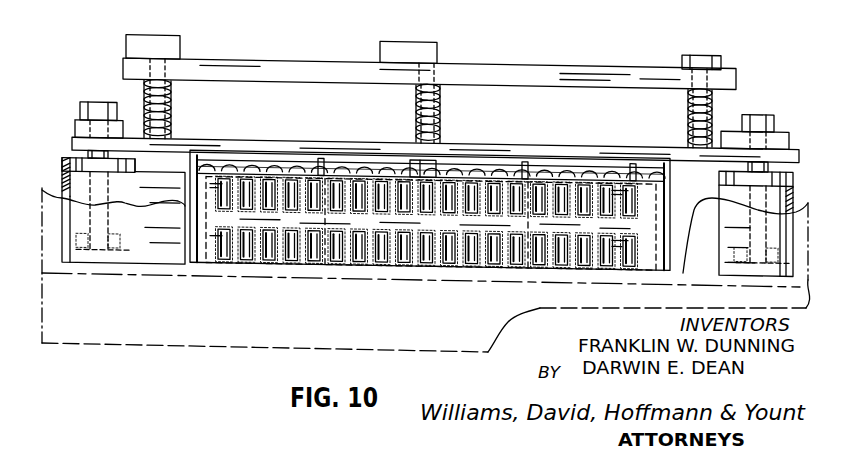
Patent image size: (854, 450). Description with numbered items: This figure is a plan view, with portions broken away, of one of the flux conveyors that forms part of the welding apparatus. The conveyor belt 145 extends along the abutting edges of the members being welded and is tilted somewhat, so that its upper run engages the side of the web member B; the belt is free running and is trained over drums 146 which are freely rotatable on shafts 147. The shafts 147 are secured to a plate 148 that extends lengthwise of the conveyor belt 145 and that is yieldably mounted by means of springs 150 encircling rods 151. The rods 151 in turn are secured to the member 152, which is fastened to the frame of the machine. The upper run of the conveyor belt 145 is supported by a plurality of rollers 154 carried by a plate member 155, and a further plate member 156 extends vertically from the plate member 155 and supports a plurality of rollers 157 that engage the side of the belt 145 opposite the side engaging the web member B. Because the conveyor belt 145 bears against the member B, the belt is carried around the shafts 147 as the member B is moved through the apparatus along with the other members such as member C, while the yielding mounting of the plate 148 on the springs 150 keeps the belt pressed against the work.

The conveyor belt 145 is at (421, 231).
The drum 146 is at (62, 186).
The shaft 147 is at (97, 264).
The plate 148 is at (597, 145).
The spring 150 is at (172, 108).
The rod 151 is at (143, 92).
The member 152 is at (526, 66).
The roller 154 is at (355, 258).
The plate member 155 is at (430, 258).
The plate member 156 is at (287, 162).
The roller 157 is at (335, 164).
The member B is at (240, 278).
The member C is at (210, 350).